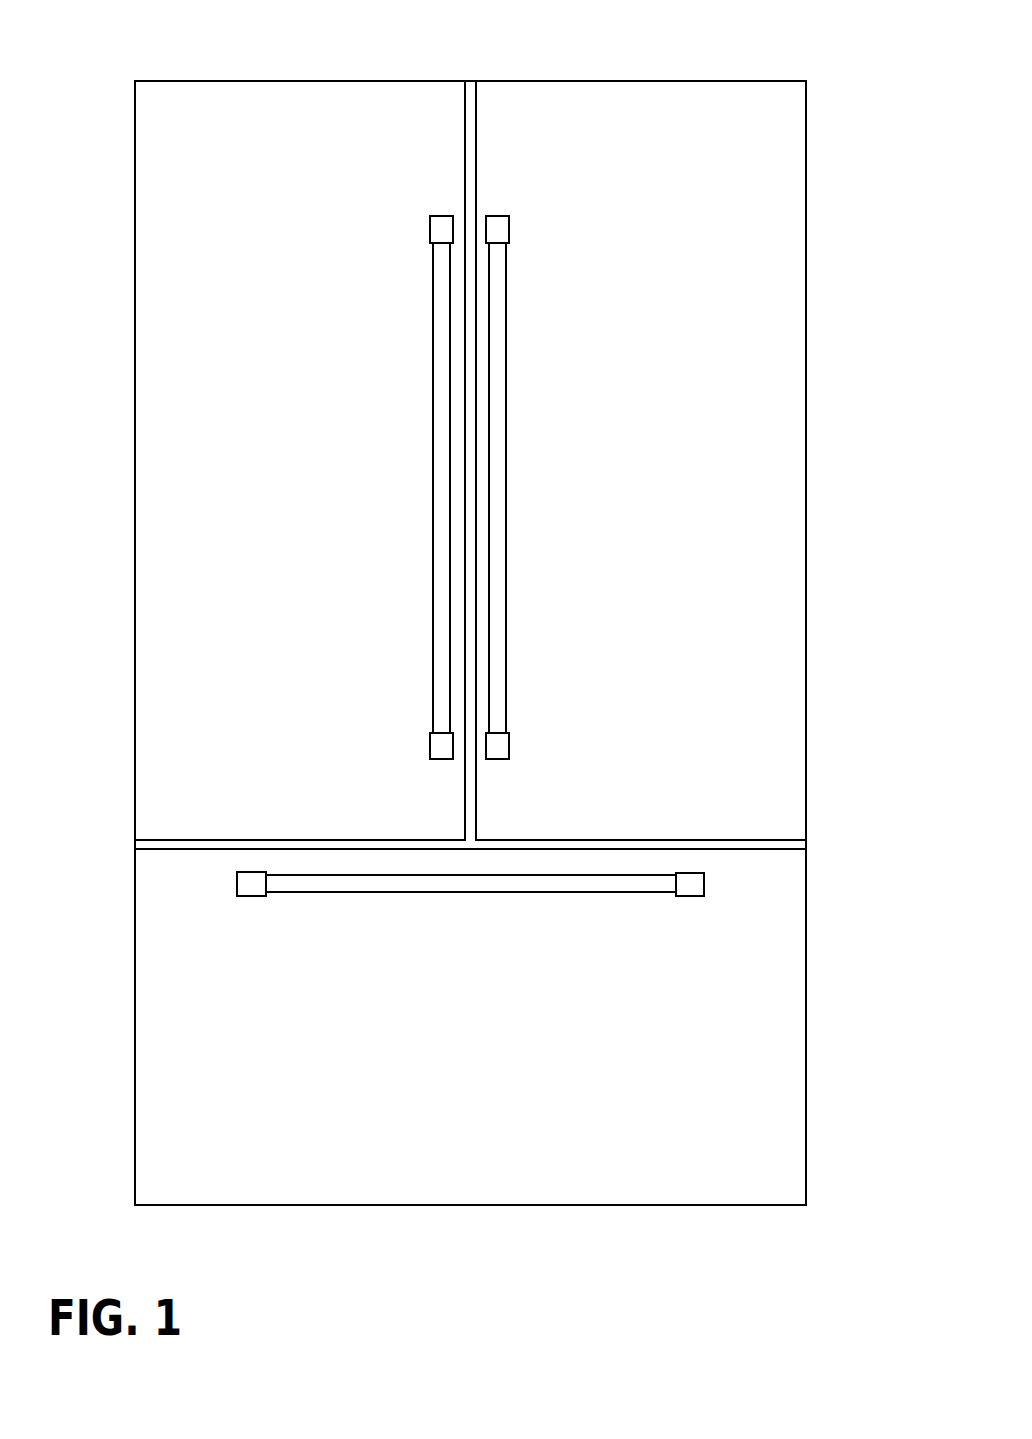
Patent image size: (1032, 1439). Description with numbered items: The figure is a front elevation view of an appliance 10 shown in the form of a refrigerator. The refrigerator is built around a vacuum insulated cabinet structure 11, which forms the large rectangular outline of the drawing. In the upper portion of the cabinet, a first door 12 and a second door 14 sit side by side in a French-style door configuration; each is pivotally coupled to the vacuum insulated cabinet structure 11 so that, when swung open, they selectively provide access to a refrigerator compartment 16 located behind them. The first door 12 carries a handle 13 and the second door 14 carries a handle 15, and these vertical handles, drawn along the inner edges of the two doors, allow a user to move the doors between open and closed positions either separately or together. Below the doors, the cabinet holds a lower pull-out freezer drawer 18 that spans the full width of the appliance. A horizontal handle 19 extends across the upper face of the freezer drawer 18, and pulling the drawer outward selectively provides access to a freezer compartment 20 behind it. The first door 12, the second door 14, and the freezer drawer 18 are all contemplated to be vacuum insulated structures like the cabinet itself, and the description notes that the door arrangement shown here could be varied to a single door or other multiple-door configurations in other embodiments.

The appliance 10 is at (847, 125).
The vacuum insulated cabinet structure 11 is at (111, 186).
The first door 12 is at (250, 592).
The handle 13 is at (442, 270).
The second door 14 is at (695, 532).
The handle 15 is at (496, 270).
The refrigerator compartment 16 is at (634, 327).
The freezer drawer 18 is at (698, 1052).
The handle 19 is at (330, 884).
The freezer compartment 20 is at (634, 988).